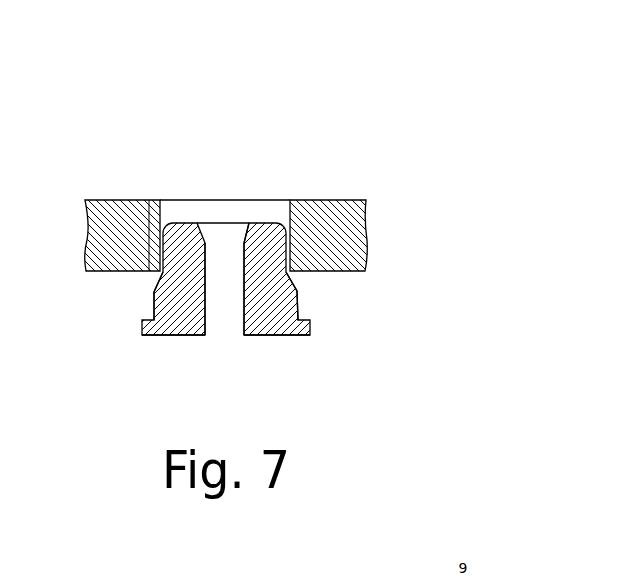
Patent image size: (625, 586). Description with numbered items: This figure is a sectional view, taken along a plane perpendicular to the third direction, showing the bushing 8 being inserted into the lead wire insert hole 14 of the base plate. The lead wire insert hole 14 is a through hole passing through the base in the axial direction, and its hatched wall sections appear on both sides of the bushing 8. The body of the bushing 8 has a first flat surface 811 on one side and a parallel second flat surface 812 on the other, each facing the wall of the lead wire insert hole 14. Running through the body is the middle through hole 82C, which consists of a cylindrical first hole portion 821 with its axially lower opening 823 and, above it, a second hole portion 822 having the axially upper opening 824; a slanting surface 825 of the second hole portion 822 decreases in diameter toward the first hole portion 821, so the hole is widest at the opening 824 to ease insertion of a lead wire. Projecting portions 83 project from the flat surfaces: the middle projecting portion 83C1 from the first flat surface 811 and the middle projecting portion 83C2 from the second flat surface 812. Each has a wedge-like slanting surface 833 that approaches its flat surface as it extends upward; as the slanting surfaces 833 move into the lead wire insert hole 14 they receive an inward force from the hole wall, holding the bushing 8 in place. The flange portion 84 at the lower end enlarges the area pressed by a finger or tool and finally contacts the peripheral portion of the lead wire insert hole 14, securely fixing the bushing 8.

The bushing 8 is at (222, 68).
The lead wire insert hole 14 is at (172, 199).
The first flat surface 811 is at (147, 199).
The second flat surface 812 is at (303, 199).
The slanting surface 825 is at (200, 199).
The opening 824 is at (226, 222).
The second hole portion 822 is at (252, 223).
The first hole portion 821 is at (208, 337).
The opening 823 is at (222, 337).
The middle through hole 82C is at (250, 338).
The slanting surface 833 is at (156, 284).
The projecting portion 83 is at (226, 311).
The middle projecting portion 83C1 is at (152, 311).
The middle projecting portion 83C2 is at (299, 311).
The flange portion 84 is at (310, 336).